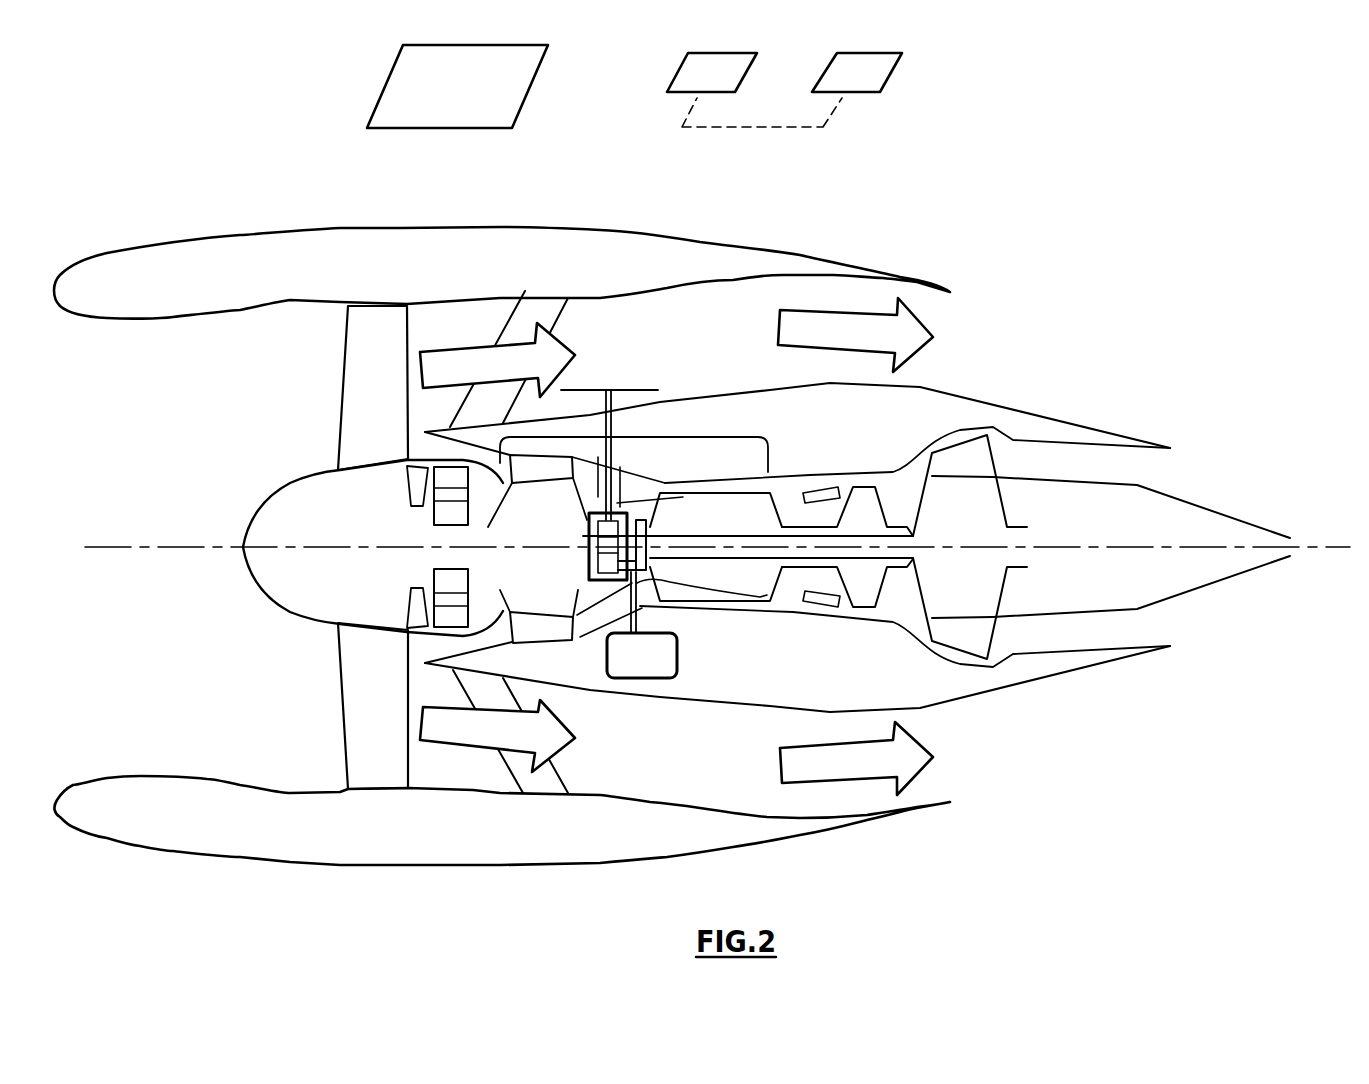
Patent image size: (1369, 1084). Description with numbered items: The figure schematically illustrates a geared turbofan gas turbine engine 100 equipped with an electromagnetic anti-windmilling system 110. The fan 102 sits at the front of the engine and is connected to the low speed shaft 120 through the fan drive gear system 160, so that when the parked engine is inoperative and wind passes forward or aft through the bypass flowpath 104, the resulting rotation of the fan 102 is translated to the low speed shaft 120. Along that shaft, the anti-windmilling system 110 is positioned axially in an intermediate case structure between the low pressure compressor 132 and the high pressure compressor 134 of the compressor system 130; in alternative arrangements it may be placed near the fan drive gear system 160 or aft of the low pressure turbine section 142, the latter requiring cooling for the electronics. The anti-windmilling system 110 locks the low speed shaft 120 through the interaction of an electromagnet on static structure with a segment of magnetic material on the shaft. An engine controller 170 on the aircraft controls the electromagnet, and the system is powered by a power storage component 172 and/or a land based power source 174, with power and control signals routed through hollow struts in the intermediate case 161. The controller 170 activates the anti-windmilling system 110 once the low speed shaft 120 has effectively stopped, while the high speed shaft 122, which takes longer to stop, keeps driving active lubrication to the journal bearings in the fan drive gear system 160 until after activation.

The gas turbine engine 100 is at (1049, 205).
The fan 102 is at (357, 412).
The bypass flowpath 104 is at (748, 315).
The electromagnetic anti-windmilling system 110 is at (593, 596).
The low speed shaft 120 is at (760, 603).
The high speed shaft 122 is at (883, 507).
The compressor system 130 is at (657, 432).
The low pressure compressor 132 is at (528, 472).
The high pressure compressor 134 is at (683, 497).
The low pressure turbine section 142 is at (963, 452).
The fan drive gear system 160 is at (434, 511).
The intermediate case 161 is at (640, 480).
The engine controller 170 is at (561, 390).
The power storage component 172 is at (658, 390).
The land based power source 174 is at (876, 85).